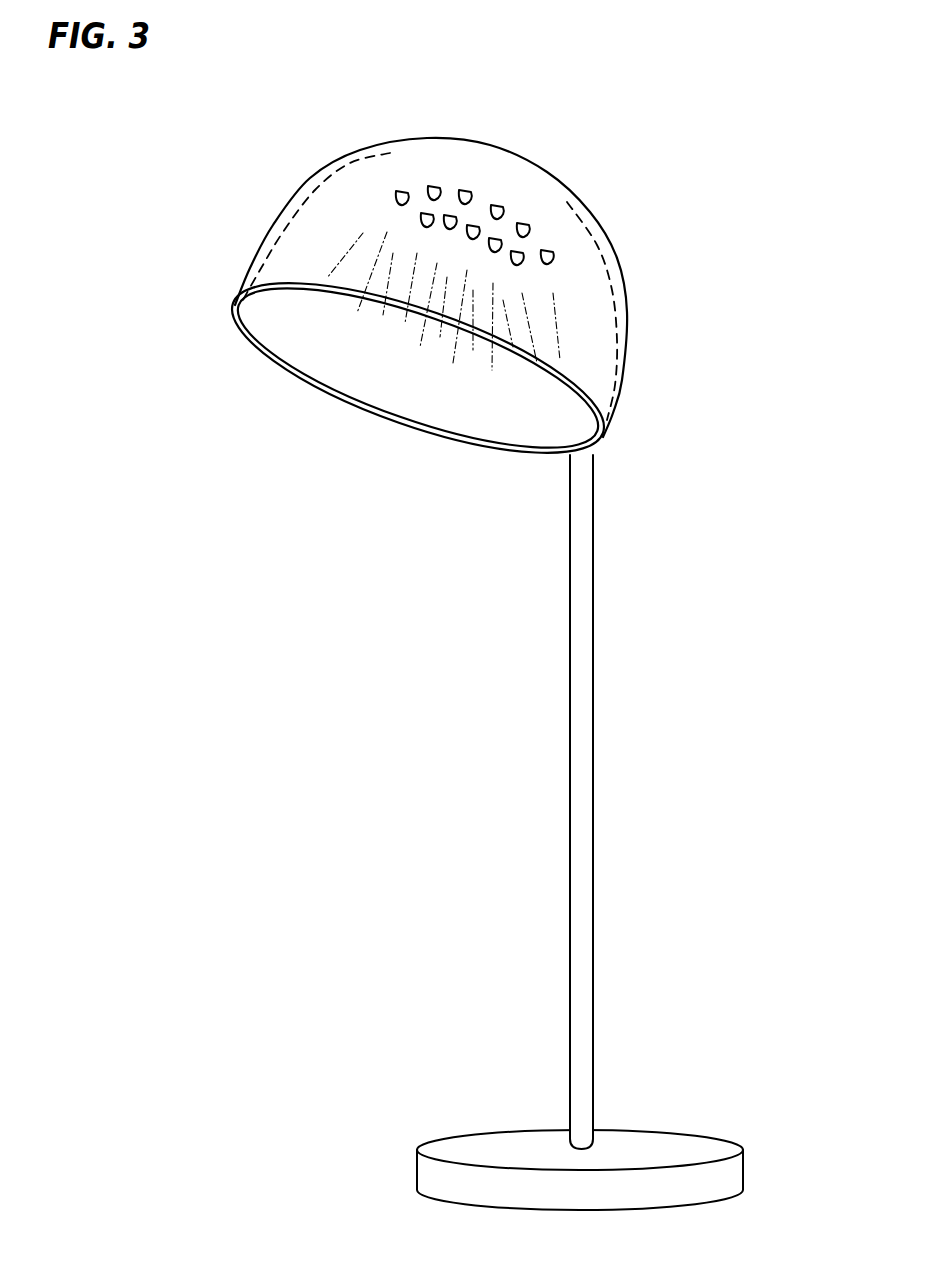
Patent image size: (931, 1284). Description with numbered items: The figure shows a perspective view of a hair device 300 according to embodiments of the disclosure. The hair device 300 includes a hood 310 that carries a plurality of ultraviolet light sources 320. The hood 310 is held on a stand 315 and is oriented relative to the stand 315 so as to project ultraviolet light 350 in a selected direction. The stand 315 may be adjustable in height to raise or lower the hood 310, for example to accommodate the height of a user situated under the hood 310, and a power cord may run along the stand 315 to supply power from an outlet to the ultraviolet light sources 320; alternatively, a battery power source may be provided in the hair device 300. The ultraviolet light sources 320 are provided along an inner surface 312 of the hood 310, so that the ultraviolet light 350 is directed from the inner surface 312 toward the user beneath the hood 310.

The hair device 300 is at (658, 165).
The hood 310 is at (263, 277).
The inner surface 312 is at (268, 322).
The stand 315 is at (579, 581).
The ultraviolet light sources 320 is at (400, 195).
The ultraviolet light 350 is at (367, 232).